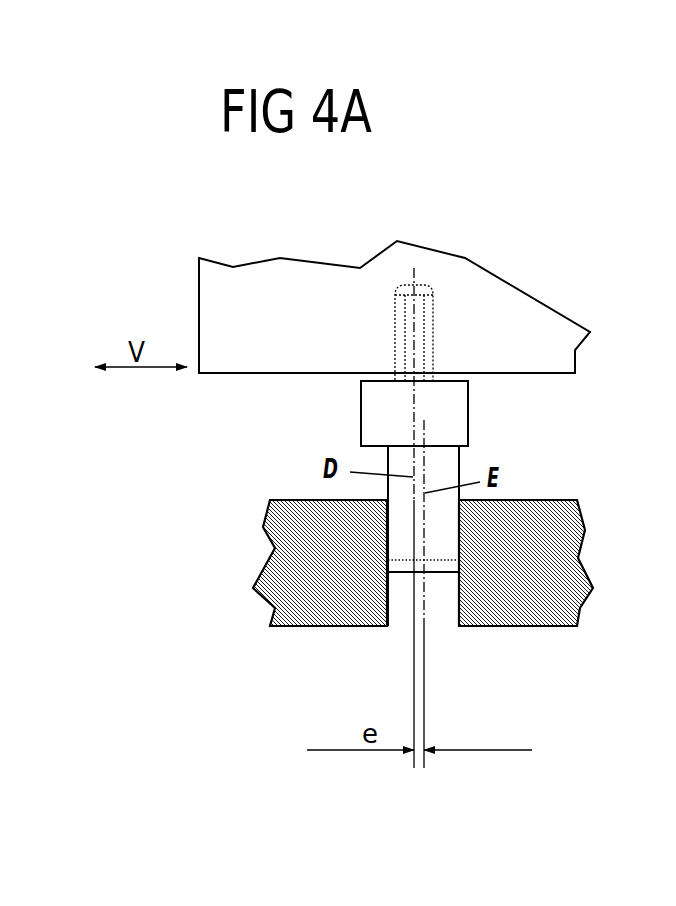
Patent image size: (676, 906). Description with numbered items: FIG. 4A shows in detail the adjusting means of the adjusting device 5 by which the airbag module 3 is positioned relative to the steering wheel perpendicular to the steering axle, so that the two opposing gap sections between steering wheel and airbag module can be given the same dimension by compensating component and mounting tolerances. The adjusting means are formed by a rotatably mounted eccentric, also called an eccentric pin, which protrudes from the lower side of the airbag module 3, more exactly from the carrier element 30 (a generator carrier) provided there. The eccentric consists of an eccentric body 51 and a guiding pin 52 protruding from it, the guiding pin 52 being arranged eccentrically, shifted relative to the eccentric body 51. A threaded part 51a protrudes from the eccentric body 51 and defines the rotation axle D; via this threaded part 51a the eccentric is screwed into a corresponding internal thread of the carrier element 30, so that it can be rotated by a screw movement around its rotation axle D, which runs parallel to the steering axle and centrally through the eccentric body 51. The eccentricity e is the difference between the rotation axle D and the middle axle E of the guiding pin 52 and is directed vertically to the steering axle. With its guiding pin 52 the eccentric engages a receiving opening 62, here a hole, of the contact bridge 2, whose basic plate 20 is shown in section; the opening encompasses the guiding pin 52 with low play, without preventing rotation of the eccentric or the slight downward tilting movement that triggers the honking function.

The contact bridge 2 is at (262, 525).
The airbag module 3 is at (199, 297).
The adjusting device 5 is at (361, 418).
The basic plate 20 is at (317, 608).
The carrier element 30 is at (315, 373).
The eccentric body 51 is at (457, 421).
The threaded part 51a is at (420, 318).
The guiding pin 52 is at (450, 522).
The receiving opening 62 is at (442, 612).